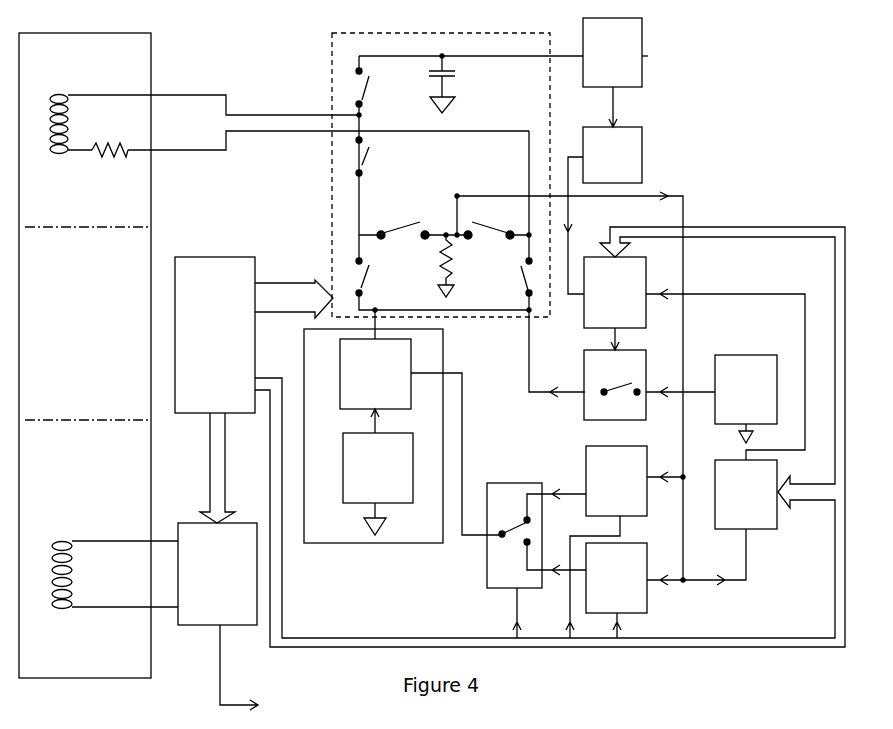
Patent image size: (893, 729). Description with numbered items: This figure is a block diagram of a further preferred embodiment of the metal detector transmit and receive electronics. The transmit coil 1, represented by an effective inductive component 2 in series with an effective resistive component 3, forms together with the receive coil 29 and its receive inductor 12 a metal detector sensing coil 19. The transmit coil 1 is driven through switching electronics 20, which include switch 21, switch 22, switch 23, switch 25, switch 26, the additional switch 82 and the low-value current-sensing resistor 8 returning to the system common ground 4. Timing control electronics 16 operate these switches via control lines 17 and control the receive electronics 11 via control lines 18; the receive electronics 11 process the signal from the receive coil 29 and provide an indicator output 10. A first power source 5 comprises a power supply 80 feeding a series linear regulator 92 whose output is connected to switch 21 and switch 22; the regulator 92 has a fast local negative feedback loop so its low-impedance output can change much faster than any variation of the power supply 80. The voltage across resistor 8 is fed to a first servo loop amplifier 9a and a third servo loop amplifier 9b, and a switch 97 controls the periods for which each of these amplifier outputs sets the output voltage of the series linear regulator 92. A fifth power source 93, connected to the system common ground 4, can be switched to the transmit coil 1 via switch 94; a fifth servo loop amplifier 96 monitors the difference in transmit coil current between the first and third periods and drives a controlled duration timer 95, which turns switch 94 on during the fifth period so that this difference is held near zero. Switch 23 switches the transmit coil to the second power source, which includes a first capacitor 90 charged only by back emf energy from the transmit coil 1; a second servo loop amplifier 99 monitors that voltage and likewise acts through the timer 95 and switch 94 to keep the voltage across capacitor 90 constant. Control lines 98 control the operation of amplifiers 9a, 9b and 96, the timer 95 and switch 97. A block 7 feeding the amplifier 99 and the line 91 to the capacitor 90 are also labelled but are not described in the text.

The transmit coil 1 is at (85, 355).
The effective inductive component 2 is at (72, 142).
The effective resistive component 3 is at (98, 160).
The system common ground 4 is at (456, 295).
The first power source 5 is at (443, 357).
The power supply 7 is at (615, 52).
The resistor 8 is at (441, 263).
The first servo loop amplifier 9a is at (616, 481).
The third servo loop amplifier 9b is at (616, 578).
The indicator output 10 is at (253, 671).
The receive electronics 11 is at (217, 574).
The receive inductor 12 is at (76, 584).
The timing control electronics 16 is at (215, 335).
The control lines 17 is at (277, 286).
The control lines 18 is at (208, 488).
The metal detector sensing coil 19 is at (28, 340).
The switching electronics 20 is at (449, 33).
The switch 21 is at (366, 272).
The switch 22 is at (520, 268).
The switch 23 is at (368, 97).
The switch 25 is at (402, 224).
The switch 26 is at (477, 222).
The receive coil 29 is at (87, 448).
The power supply 80 is at (378, 456).
The switch 82 is at (365, 160).
The first capacitor 90 is at (429, 75).
The supply line 91 is at (495, 57).
The series linear regulator 92 is at (375, 359).
The fifth power source 93 is at (746, 389).
The switch 94 is at (615, 385).
The controlled duration timer 95 is at (615, 292).
The fifth servo loop amplifier 96 is at (746, 494).
The switch 97 is at (536, 560).
The control lines 98 is at (758, 230).
The second servo loop amplifier 99 is at (612, 155).